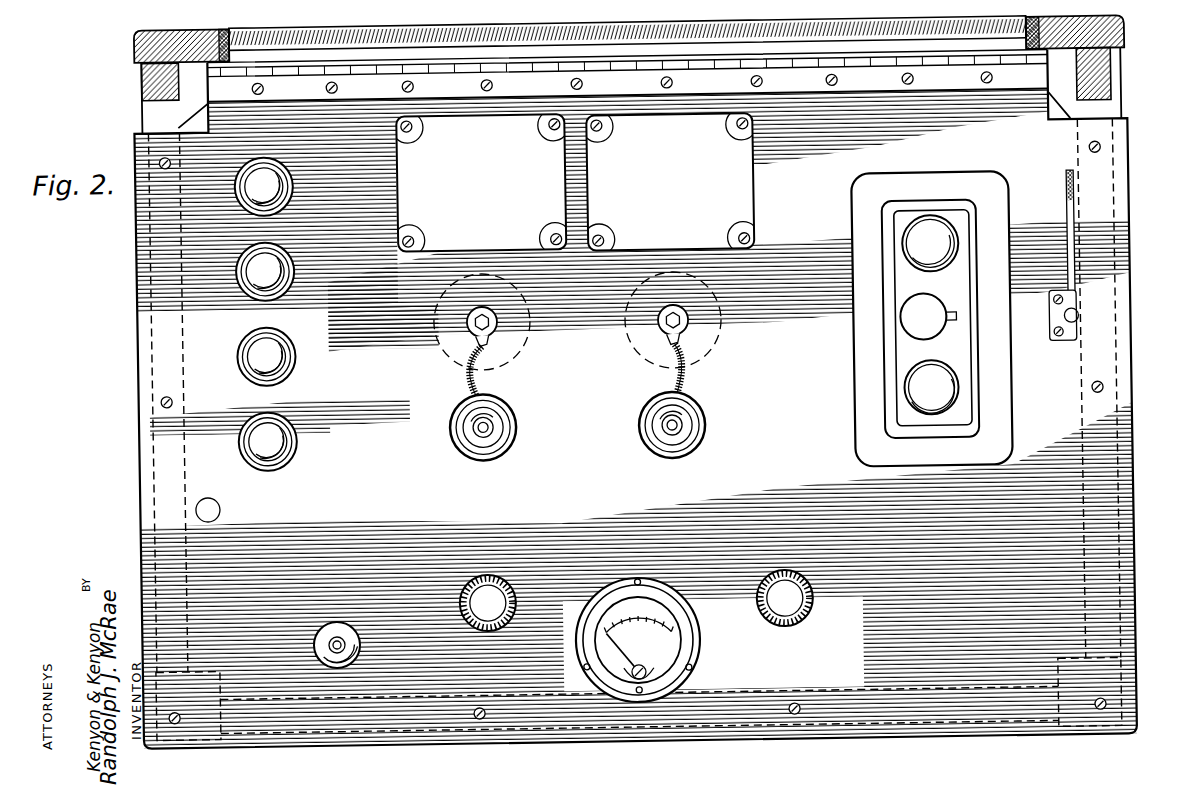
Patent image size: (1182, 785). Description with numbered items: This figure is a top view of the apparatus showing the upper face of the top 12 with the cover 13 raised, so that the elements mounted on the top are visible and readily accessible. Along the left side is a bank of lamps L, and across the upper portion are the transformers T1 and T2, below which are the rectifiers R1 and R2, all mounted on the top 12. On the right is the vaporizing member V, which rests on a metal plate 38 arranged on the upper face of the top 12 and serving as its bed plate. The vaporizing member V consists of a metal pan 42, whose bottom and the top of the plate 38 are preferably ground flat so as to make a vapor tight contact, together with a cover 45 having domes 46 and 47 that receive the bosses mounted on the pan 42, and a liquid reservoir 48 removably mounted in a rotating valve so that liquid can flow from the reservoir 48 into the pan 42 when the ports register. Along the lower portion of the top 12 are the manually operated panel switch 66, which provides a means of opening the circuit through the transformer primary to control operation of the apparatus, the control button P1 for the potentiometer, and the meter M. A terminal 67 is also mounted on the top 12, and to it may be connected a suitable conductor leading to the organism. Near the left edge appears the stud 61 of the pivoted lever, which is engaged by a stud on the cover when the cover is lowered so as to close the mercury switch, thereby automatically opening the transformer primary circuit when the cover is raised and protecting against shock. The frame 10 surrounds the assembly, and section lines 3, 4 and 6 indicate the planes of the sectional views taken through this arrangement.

The housing frame 10 is at (148, 310).
The top 12 is at (139, 483).
The cover 13 is at (140, 36).
The bank of lamps L is at (297, 181).
The transformer T1 is at (481, 183).
The transformer T2 is at (670, 182).
The rectifier R1 is at (516, 431).
The rectifier R2 is at (705, 430).
The vaporizing member V is at (934, 318).
The metal pan 42 is at (976, 218).
The metal plate 38 is at (1000, 428).
The cover 45 is at (905, 234).
The dome 46 is at (940, 258).
The dome 47 is at (915, 398).
The liquid reservoir 48 is at (928, 316).
The stud 61 is at (219, 503).
The switch 66 is at (503, 584).
The terminal 67 is at (336, 638).
The meter M is at (696, 661).
The control button P1 is at (811, 602).
The section line 3 is at (928, 0).
The section line 4 is at (140, 395).
The section line 6 is at (200, 643).